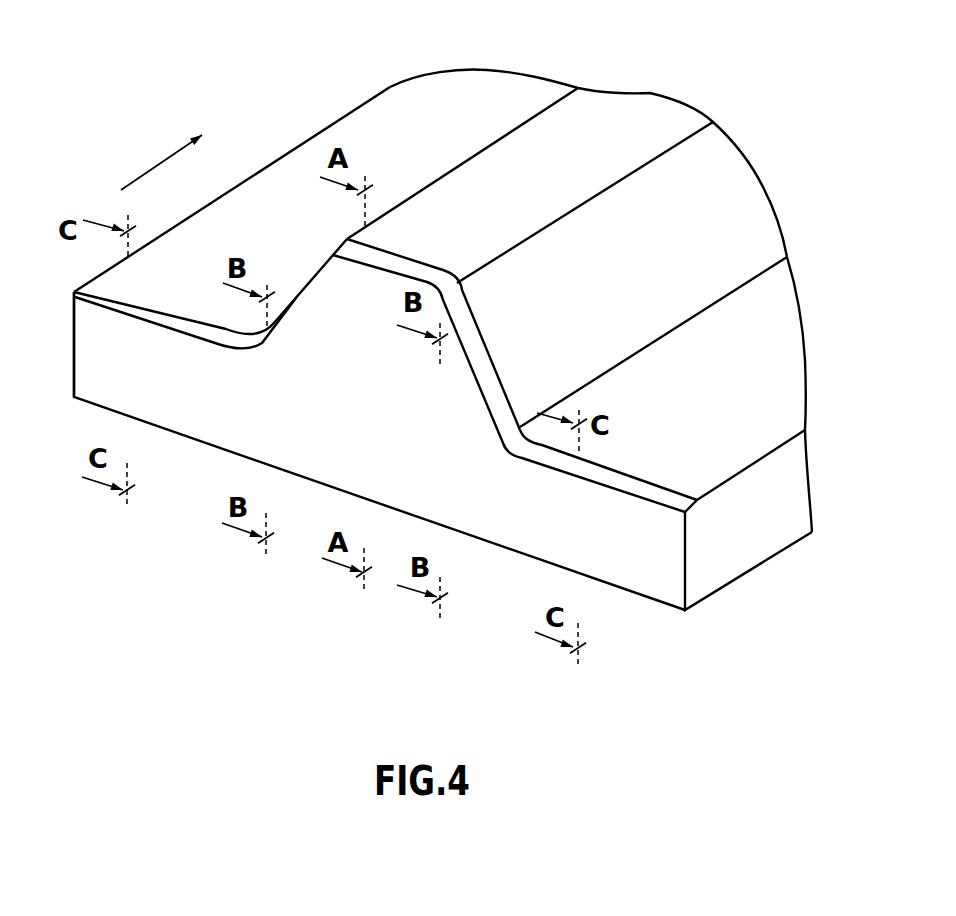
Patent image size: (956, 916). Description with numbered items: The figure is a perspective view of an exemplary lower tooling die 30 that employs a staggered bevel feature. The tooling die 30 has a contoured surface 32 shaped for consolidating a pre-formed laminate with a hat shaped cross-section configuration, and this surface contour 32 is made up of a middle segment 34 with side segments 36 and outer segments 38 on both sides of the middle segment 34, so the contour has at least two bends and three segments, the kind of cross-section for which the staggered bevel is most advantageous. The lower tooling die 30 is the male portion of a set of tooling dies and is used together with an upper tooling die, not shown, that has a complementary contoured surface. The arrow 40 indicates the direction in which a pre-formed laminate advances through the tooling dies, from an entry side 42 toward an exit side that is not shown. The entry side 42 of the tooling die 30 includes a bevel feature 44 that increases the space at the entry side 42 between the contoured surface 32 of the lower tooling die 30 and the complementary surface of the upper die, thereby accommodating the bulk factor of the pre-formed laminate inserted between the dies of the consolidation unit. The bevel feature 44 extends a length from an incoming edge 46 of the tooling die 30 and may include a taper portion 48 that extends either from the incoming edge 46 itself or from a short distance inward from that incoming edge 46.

The lower tooling die 30 is at (243, 157).
The contoured surface 32 is at (647, 253).
The middle segment 34 is at (610, 115).
The side segments 36 is at (297, 290).
The outer segments 38 is at (433, 100).
The arrow 40 is at (152, 168).
The entry side 42 is at (190, 378).
The bevel feature 44 is at (120, 300).
The incoming edge 46 is at (652, 500).
The taper portion 48 is at (150, 310).